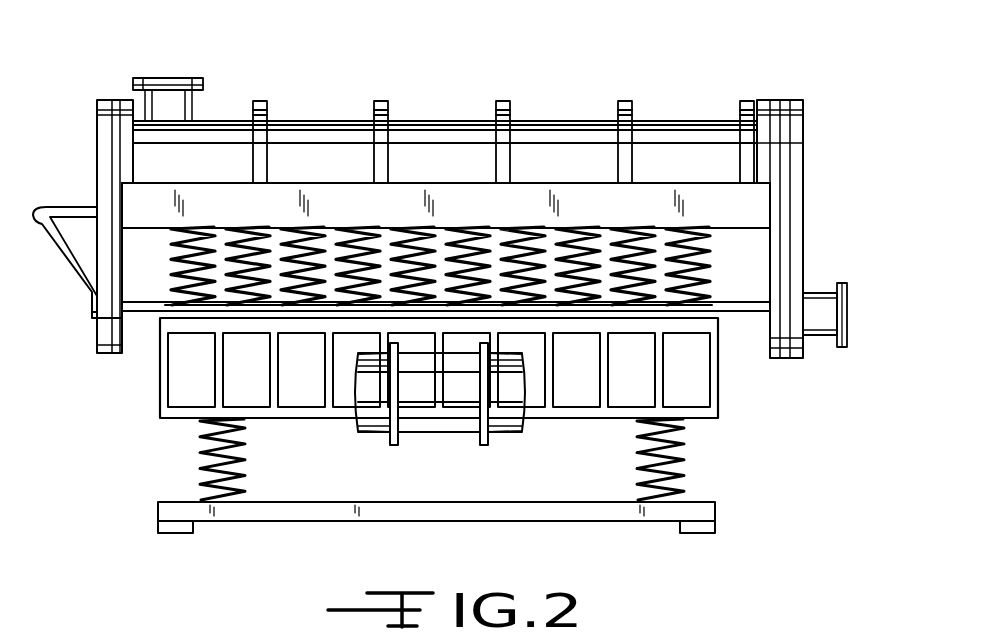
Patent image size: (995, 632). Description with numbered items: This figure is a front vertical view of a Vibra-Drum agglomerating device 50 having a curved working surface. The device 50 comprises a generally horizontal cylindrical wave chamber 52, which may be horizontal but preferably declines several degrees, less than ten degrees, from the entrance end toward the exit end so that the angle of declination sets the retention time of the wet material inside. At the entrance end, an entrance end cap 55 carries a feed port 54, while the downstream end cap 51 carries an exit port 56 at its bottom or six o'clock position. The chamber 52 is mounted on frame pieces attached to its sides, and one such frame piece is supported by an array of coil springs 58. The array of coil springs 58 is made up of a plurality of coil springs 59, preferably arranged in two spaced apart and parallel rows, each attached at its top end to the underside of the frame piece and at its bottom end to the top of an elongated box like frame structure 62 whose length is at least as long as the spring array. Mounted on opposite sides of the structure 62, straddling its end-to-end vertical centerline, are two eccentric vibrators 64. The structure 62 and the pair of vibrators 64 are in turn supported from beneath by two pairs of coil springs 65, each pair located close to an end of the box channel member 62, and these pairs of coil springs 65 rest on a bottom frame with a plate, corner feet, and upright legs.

The Vibra-Drum device 50 is at (323, 112).
The downstream end cap 51 is at (803, 180).
The cylindrical wave chamber 52 is at (433, 120).
The feed port 54 is at (43, 192).
The entrance end cap 55 is at (98, 127).
The exit port 56 is at (858, 312).
The array of coil springs 58 is at (375, 317).
The coil springs 59 is at (207, 290).
The box like frame structure 62 is at (720, 367).
The eccentric vibrators 64 is at (508, 446).
The pairs of coil springs 65 is at (197, 457).